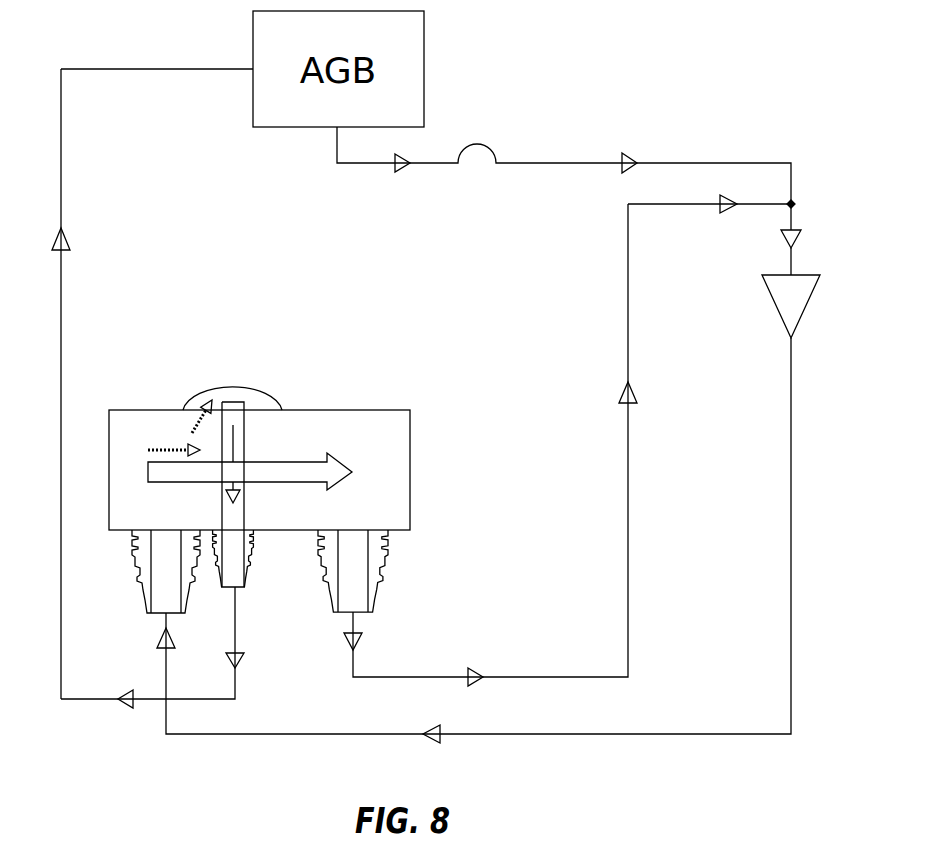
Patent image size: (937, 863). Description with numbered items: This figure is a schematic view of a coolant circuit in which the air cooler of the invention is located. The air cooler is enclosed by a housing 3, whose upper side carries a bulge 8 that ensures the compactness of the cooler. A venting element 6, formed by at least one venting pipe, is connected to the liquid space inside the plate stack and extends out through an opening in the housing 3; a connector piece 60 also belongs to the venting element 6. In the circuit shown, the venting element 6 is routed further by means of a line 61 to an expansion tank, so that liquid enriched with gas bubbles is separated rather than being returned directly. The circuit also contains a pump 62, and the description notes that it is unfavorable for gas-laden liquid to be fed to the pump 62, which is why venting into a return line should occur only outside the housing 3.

The housing 3 is at (370, 410).
The venting element 6 is at (244, 444).
The bulge 8 is at (223, 383).
The connector piece 60 is at (255, 552).
The line 61 is at (63, 302).
The pump 62 is at (775, 275).